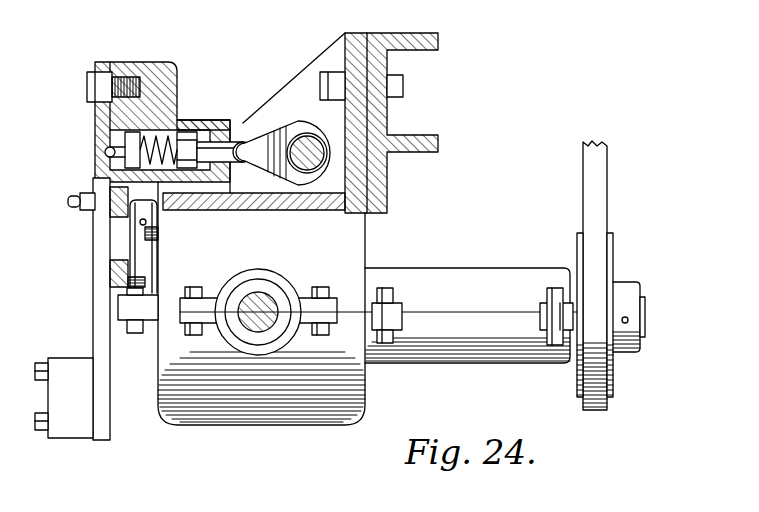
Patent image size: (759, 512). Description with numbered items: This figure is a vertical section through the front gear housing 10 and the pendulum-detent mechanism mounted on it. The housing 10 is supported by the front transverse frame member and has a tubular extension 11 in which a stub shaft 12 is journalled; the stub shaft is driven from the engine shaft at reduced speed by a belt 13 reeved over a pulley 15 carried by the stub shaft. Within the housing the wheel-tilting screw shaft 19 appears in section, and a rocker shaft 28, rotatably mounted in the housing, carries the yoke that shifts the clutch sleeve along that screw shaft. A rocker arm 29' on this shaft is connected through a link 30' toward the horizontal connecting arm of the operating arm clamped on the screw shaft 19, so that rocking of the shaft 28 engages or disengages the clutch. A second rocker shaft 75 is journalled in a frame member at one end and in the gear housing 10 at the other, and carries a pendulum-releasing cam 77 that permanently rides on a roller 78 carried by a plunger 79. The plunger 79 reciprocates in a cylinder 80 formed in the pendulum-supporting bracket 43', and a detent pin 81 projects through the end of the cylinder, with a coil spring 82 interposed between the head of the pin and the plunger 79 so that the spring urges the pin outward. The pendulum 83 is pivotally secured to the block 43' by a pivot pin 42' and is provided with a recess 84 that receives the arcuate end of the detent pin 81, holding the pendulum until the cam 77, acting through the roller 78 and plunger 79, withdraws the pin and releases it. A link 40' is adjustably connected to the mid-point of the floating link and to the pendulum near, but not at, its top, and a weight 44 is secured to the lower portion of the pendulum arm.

The front gear housing 10 is at (338, 233).
The tubular extension 11 is at (455, 283).
The stub shaft 12 is at (573, 302).
The belt 13 is at (590, 170).
The pulley 15 is at (613, 252).
The screw shaft 19 is at (264, 304).
The rocker shaft 28 is at (136, 220).
The rocker arm 29' is at (173, 243).
The link 30' is at (105, 296).
The link 40' is at (90, 211).
The pivot pin 42' is at (91, 86).
The pendulum-supporting bracket 43' is at (163, 106).
The weight 44 is at (68, 372).
The rocker shaft 75 is at (318, 158).
The pendulum-releasing cam 77 is at (296, 128).
The roller 78 is at (248, 140).
The plunger 79 is at (216, 121).
The cylinder 80 is at (178, 98).
The detent pin 81 is at (120, 146).
The coil spring 82 is at (168, 185).
The pendulum 83 is at (93, 247).
The recess 84 is at (105, 152).